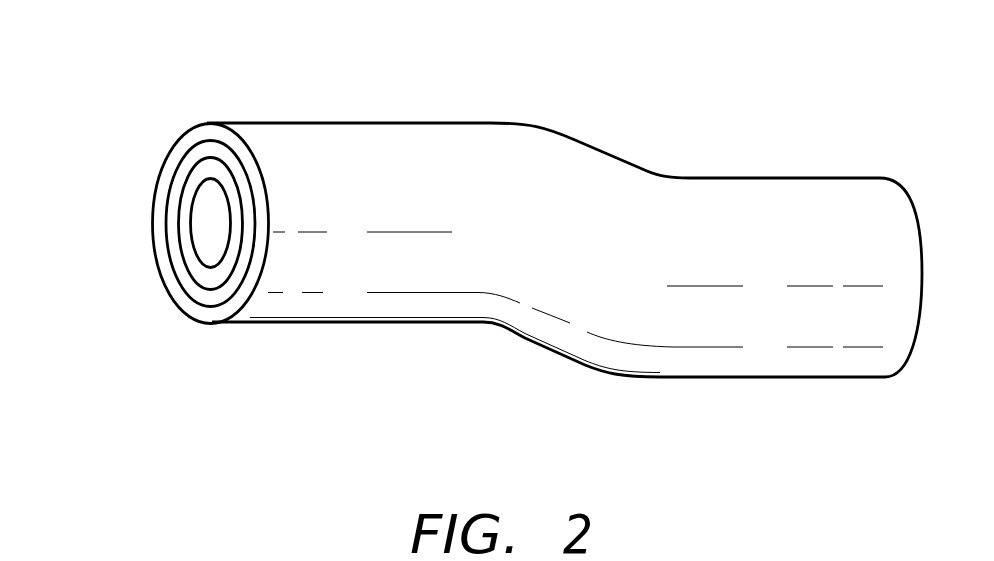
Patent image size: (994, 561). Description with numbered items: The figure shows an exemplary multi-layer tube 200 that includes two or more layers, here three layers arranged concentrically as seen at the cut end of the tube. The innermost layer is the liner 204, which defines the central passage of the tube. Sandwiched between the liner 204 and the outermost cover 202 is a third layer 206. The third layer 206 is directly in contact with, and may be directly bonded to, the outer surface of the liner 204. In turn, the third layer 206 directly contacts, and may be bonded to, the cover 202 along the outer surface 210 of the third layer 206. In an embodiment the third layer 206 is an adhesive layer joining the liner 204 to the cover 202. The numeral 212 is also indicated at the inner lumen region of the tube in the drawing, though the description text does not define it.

The multi-layer tube 200 is at (514, 102).
The cover 202 is at (173, 163).
The outer surface of third layer 210 is at (166, 208).
The third layer 206 is at (173, 230).
The liner 204 is at (195, 268).
The inner wall 212 is at (210, 267).